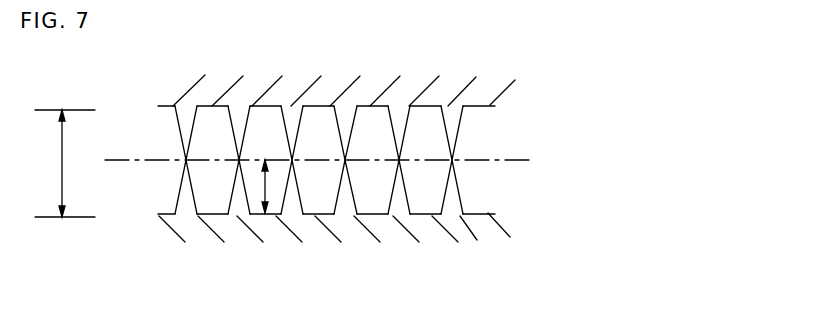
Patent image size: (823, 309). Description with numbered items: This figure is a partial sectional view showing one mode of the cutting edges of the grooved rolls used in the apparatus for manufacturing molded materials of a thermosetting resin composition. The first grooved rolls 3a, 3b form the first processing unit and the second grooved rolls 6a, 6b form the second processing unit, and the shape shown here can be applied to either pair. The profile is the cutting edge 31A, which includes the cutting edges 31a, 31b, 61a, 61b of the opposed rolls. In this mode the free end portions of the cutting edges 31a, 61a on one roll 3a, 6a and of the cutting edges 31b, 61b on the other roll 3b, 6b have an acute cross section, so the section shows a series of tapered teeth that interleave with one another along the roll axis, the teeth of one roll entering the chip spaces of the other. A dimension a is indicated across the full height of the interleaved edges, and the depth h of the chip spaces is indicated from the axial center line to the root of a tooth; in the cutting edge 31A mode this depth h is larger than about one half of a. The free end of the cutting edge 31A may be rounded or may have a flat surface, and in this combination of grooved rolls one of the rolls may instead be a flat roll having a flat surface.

The first grooved roll 3a is at (421, 107).
The second grooved roll 6a is at (421, 107).
The first grooved roll 3b is at (422, 205).
The second grooved roll 6b is at (422, 205).
The cutting edge 31a is at (429, 132).
The cutting edge 61a is at (458, 128).
The cutting edge 31b is at (430, 187).
The cutting edge 61b is at (453, 201).
The cutting edge 31A is at (464, 151).
The dimension a is at (64, 163).
The depth of the chip spaces h is at (258, 238).